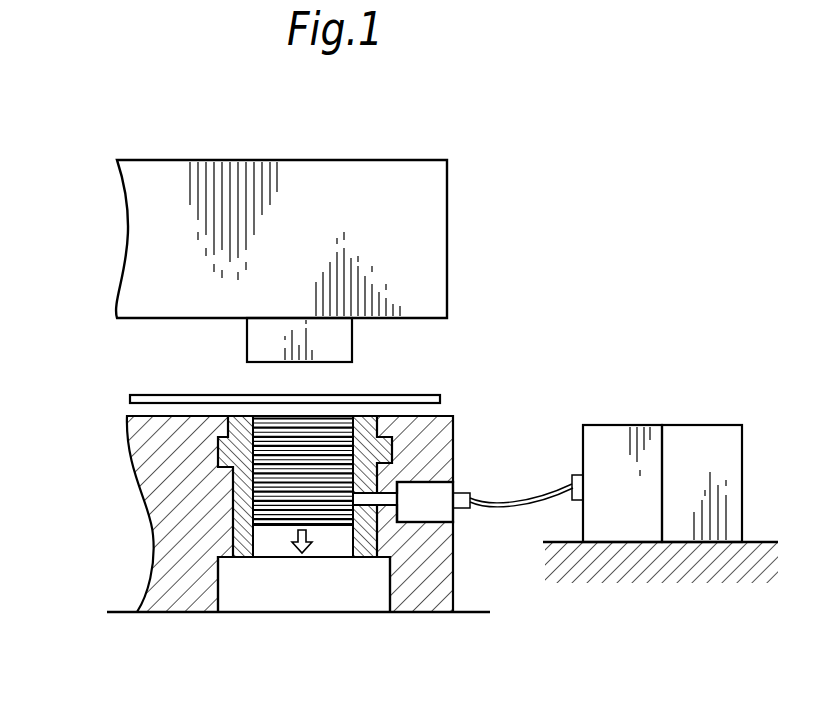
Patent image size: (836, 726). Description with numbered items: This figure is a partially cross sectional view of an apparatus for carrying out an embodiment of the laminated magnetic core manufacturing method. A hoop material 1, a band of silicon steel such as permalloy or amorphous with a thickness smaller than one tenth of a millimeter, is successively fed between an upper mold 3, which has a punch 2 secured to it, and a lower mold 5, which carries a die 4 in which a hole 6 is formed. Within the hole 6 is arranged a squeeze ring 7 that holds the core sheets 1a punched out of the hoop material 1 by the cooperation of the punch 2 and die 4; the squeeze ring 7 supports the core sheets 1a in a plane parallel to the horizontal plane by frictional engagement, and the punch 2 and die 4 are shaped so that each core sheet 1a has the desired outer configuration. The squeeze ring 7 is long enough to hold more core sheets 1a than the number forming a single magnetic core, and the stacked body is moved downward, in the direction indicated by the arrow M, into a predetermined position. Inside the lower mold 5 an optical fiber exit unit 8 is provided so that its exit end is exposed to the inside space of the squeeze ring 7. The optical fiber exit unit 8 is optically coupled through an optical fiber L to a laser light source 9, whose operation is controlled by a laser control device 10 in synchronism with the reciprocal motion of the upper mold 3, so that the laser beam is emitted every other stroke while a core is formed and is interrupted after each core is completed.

The hoop material 1 is at (147, 393).
The core sheets 1a is at (302, 458).
The punch 2 is at (257, 339).
The upper mold 3 is at (375, 177).
The die 4 is at (366, 429).
The lower mold 5 is at (138, 443).
The hole 6 is at (260, 525).
The squeeze ring 7 is at (243, 517).
The optical fiber exit unit 8 is at (428, 503).
The laser light source 9 is at (603, 437).
The laser control device 10 is at (697, 447).
The optical fiber L is at (505, 508).
The pressing direction arrow M is at (308, 557).